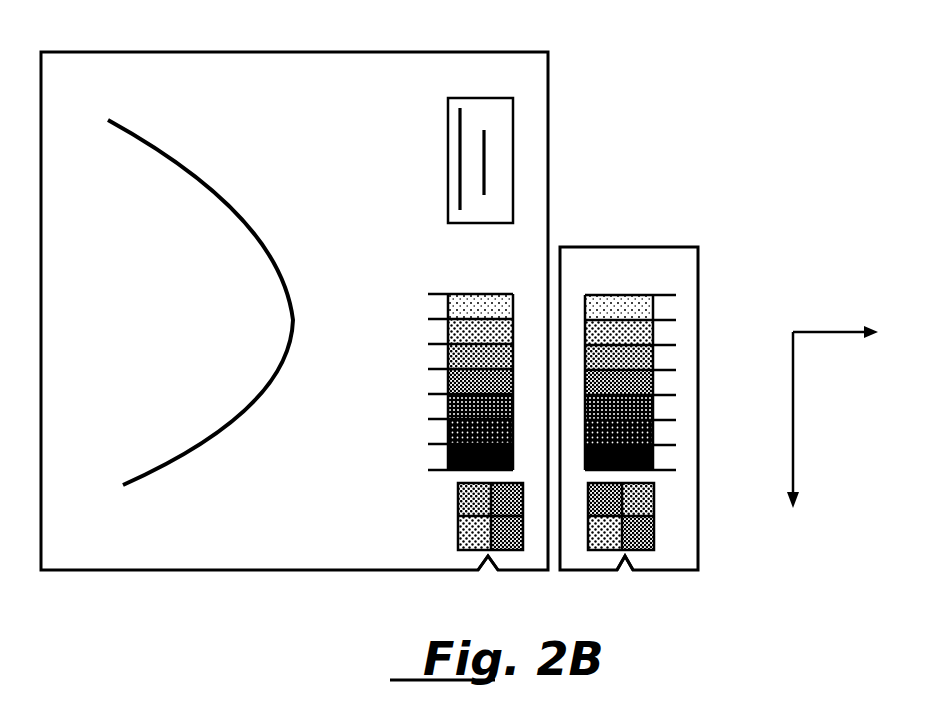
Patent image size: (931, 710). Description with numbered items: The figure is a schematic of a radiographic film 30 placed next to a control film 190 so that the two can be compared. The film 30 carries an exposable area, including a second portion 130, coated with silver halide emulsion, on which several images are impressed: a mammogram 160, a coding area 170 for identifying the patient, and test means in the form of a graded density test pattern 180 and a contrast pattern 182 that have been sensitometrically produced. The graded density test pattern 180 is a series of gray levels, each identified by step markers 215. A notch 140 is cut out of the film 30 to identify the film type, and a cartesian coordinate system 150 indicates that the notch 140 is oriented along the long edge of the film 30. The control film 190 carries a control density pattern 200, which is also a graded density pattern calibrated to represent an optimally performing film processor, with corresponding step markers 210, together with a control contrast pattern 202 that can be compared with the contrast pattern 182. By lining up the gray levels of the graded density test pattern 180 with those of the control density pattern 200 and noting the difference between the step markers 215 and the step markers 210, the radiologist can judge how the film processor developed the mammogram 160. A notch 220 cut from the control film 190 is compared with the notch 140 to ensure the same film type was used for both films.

The film 30 is at (311, 52).
The second portion 130 is at (360, 147).
The notch 140 is at (489, 573).
The cartesian coordinate system 150 is at (793, 428).
The mammogram 160 is at (223, 435).
The coding area 170 is at (513, 152).
The graded density test pattern 180 is at (442, 393).
The contrast pattern 182 is at (458, 515).
The control film 190 is at (680, 247).
The control density pattern 200 is at (622, 328).
The second gray scale block 202 is at (654, 513).
The step markers 210 is at (676, 362).
The step markers 215 is at (428, 360).
The notch 220 is at (627, 573).